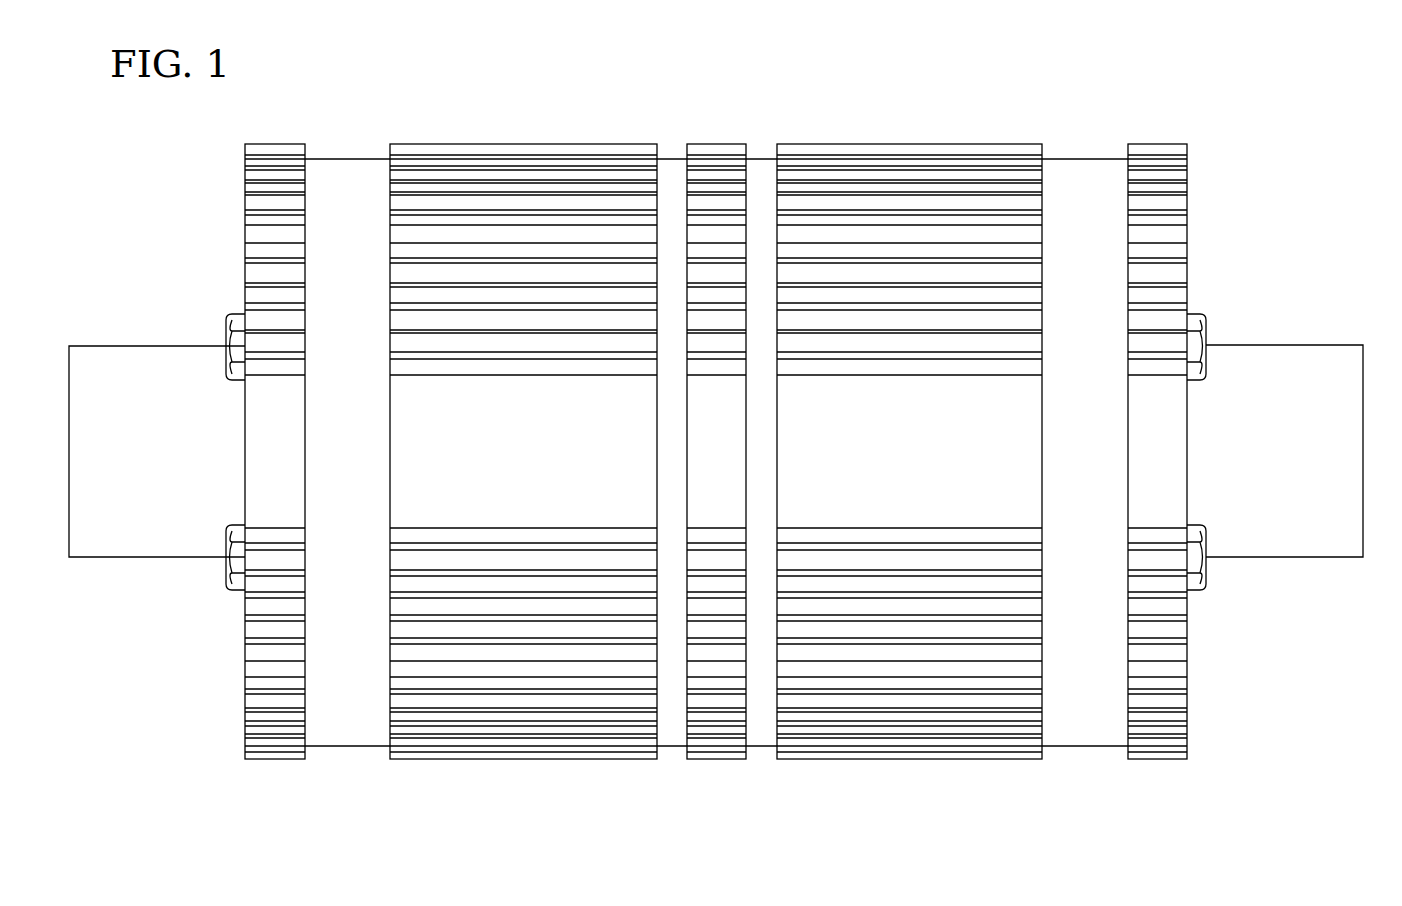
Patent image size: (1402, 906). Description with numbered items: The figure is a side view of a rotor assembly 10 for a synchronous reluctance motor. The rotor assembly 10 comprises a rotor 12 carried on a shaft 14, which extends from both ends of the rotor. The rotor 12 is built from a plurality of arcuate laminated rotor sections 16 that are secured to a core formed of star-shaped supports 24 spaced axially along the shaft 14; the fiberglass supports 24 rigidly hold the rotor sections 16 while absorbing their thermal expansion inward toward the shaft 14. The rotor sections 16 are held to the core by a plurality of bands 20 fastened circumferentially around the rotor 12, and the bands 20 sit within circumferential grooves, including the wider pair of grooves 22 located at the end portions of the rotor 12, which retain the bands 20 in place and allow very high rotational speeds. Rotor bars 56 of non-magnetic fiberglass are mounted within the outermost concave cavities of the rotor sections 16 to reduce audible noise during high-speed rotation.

The rotor assembly 10 is at (1048, 100).
The rotor 12 is at (1170, 133).
The shaft 14 is at (1270, 345).
The arcuate laminated rotor sections 16 is at (515, 148).
The bands 20 is at (346, 722).
The grooves 22 is at (343, 142).
The star-shaped supports 24 is at (676, 148).
The rotor bars 56 is at (895, 505).